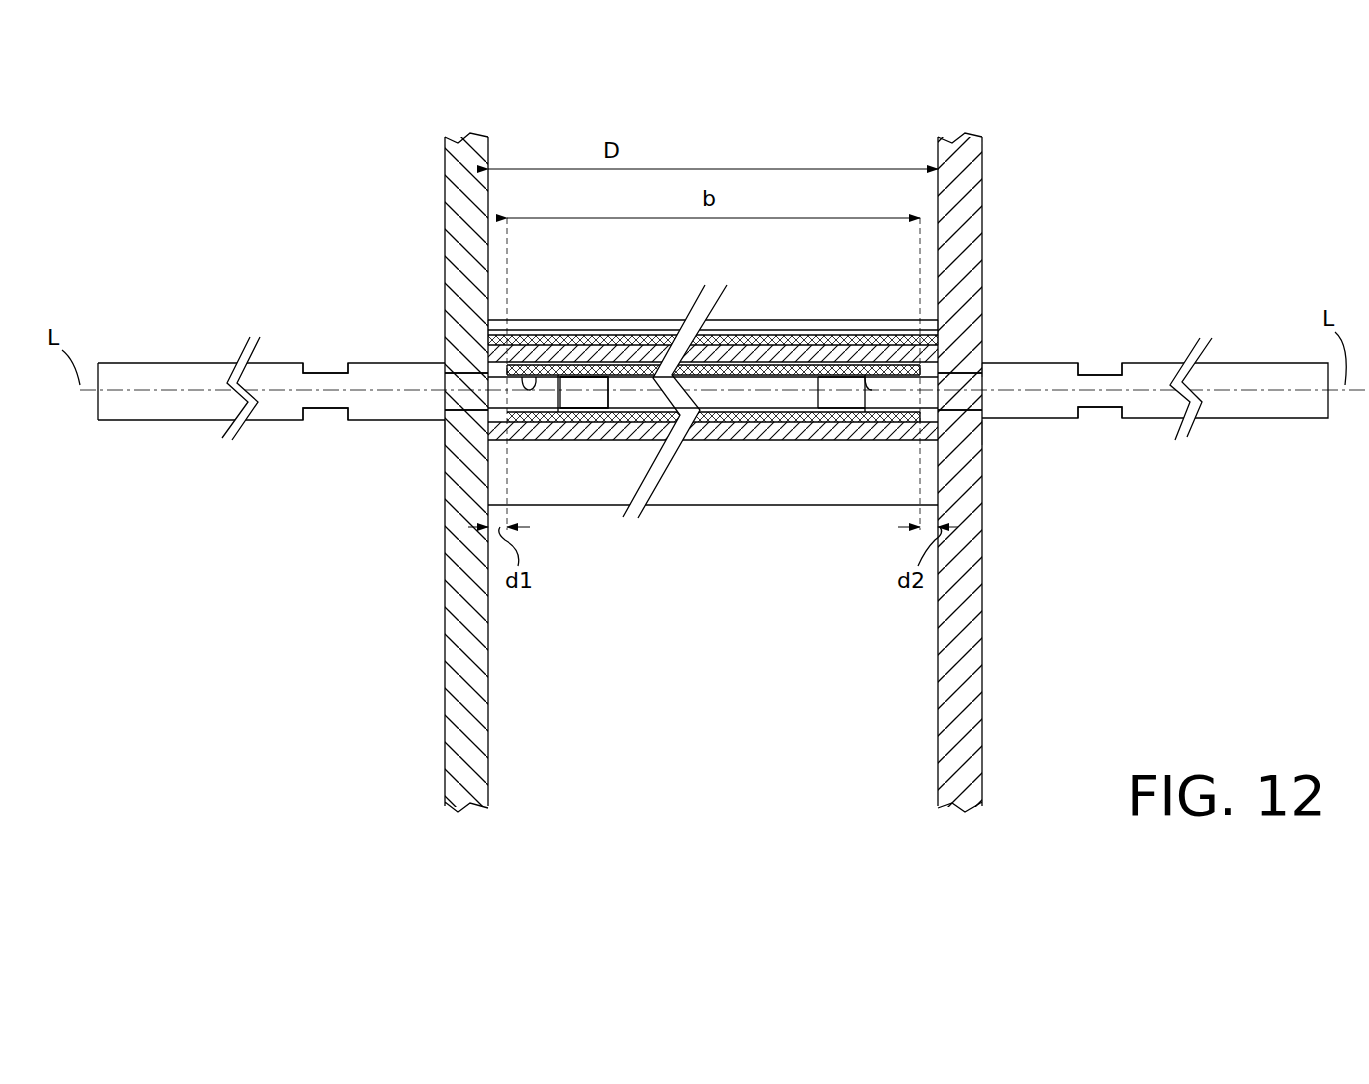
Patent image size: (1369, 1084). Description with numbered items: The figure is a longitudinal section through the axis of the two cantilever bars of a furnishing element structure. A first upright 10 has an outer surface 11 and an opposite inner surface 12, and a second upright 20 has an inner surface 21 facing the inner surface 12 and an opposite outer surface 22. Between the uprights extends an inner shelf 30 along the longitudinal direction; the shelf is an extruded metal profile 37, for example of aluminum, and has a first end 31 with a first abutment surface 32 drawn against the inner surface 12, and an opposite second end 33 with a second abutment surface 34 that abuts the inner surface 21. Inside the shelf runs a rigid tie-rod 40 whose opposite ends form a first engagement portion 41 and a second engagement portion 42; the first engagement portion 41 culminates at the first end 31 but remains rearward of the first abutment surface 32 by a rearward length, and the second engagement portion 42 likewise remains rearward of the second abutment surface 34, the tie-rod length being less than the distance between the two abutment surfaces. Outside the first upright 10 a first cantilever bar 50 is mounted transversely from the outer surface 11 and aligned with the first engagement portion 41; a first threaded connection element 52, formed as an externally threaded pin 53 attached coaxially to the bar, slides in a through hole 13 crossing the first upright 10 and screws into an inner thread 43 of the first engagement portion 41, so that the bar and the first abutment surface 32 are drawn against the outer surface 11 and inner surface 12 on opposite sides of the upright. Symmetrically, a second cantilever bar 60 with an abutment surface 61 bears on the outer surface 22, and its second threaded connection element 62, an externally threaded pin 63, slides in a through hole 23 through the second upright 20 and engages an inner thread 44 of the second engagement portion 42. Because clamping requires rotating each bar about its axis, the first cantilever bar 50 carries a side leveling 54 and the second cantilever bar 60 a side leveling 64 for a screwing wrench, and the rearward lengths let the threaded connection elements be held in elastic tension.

The first upright 10 is at (488, 160).
The outer surface 11 is at (445, 662).
The inner surface 12 is at (488, 644).
The through hole 13 is at (447, 423).
The second upright 20 is at (970, 192).
The inner surface 21 is at (938, 692).
The outer surface 22 is at (982, 700).
The through hole 23 is at (985, 420).
The inner shelf 30 is at (762, 322).
The first end 31 is at (478, 328).
The first abutment surface 32 is at (445, 418).
The second end 33 is at (940, 320).
The second abutment surface 34 is at (960, 438).
The extruded metal profile 37 is at (700, 505).
The tie-rod 40 is at (747, 430).
The first engagement portion 41 is at (540, 440).
The second engagement portion 42 is at (878, 415).
The inner thread 43 is at (533, 385).
The inner thread 44 is at (868, 385).
The first cantilever bar 50 is at (375, 372).
The first threaded connection element 52 is at (572, 370).
The threaded pin 53 is at (565, 412).
The side leveling 54 is at (318, 372).
The second cantilever bar 60 is at (1155, 420).
The abutment surface 61 is at (982, 350).
The second threaded connection element 62 is at (885, 375).
The threaded pin 63 is at (875, 420).
The side leveling 64 is at (1100, 362).